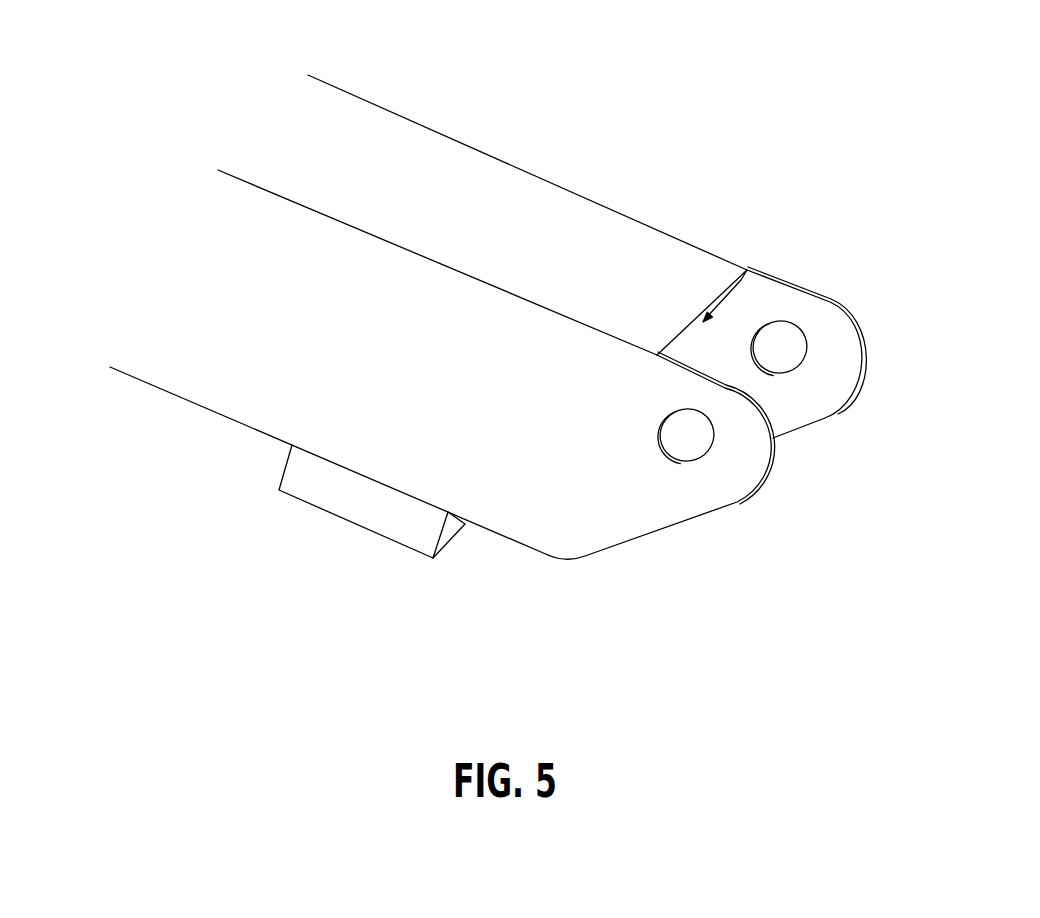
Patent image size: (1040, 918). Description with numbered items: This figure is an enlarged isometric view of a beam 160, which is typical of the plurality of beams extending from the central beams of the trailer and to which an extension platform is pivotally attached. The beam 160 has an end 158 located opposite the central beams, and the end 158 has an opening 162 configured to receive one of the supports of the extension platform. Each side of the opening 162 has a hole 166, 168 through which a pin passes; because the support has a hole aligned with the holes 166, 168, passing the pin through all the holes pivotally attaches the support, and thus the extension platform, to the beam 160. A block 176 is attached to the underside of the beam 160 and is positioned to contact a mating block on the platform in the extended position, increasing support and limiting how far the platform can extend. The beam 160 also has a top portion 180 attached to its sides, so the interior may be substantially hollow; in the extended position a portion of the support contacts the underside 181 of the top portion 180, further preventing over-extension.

The end 158 is at (783, 430).
The beam 160 is at (428, 294).
The opening 162 is at (830, 370).
The hole 166 is at (703, 460).
The hole 168 is at (802, 330).
The block 176 is at (367, 530).
The top portion 180 is at (602, 225).
The underside 181 is at (712, 345).